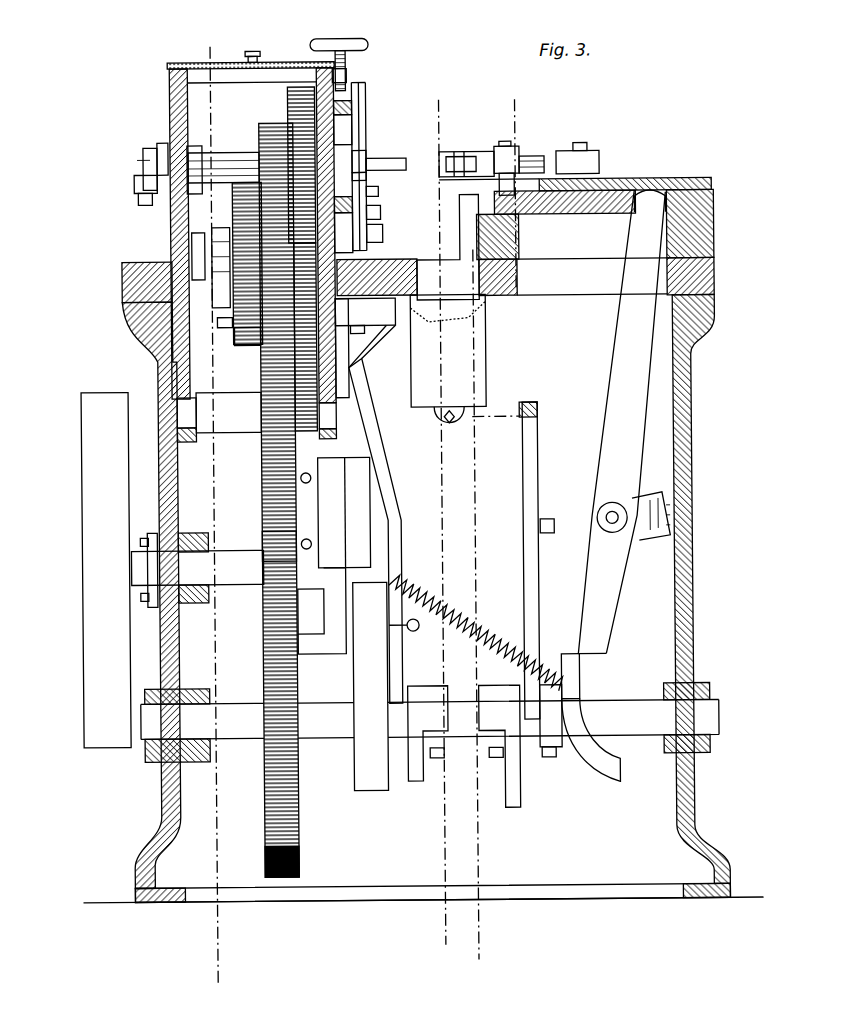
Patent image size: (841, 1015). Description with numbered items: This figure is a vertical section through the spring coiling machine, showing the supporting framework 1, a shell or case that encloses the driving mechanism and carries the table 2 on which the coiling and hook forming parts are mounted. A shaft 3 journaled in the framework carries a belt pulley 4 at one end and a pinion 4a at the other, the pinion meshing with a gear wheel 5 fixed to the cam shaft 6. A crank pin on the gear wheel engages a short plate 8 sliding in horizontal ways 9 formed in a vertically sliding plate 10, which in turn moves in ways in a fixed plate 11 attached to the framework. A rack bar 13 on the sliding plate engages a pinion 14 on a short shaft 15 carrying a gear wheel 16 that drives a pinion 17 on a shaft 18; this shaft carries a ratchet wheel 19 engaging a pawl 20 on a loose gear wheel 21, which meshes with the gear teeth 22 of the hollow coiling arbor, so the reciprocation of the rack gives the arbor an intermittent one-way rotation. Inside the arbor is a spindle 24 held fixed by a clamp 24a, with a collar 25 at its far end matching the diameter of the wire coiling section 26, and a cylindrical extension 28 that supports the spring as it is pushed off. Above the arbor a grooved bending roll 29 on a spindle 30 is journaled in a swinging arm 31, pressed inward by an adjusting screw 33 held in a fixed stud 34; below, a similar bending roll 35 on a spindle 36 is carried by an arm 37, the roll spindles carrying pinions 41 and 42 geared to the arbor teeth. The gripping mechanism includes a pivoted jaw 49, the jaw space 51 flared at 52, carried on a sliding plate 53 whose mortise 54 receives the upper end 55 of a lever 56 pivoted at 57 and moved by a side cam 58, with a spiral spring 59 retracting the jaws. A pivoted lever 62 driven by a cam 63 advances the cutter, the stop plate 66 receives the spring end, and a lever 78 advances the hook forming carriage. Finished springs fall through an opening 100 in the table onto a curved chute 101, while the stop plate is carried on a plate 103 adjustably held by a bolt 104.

The supporting framework 1 is at (159, 356).
The table 2 is at (127, 288).
The shaft 3 is at (136, 551).
The belt pulley 4 is at (69, 575).
The pinion 4a is at (262, 545).
The gear wheel 5 is at (262, 660).
The cam shaft 6 is at (323, 737).
The plate 8 is at (323, 600).
The horizontal ways 9 is at (325, 618).
The vertically sliding plate 10 is at (338, 540).
The fixed plate 11 is at (352, 665).
The rack bar 13 is at (345, 312).
The pinion 14 is at (337, 436).
The short shaft 15 is at (228, 393).
The gear wheel 16 is at (262, 480).
The pinion 17 is at (273, 235).
The shaft 18 is at (194, 248).
The ratchet wheel 19 is at (214, 231).
The pawl 20 is at (225, 330).
The gear wheel 21 is at (243, 338).
The gear teeth 22 is at (234, 155).
The spindle 24 is at (162, 144).
The clamp 24a is at (147, 181).
The collar 25 is at (369, 176).
The wire coiling section 26 is at (362, 158).
The cylindrical extension 28 is at (402, 160).
The grooved bending roll 29 is at (369, 100).
The spindle 30 is at (357, 125).
The arm 31 is at (355, 110).
The adjusting screw 33 is at (352, 56).
The fixed stud 34 is at (350, 76).
The grooved bending roll 35 is at (381, 192).
The spindle 36 is at (383, 212).
The arm 37 is at (385, 233).
The pinion 41 is at (291, 97).
The pinion 42 is at (301, 238).
The gripping jaw 49 is at (514, 147).
The space between the jaws 51 is at (537, 157).
The flared receiving end 52 is at (494, 152).
The sliding plate 53 is at (550, 200).
The mortise 54 is at (692, 187).
The upper end of lever 55 is at (650, 192).
The lever 56 is at (630, 350).
The pivot 57 is at (604, 514).
The side cam 58 is at (585, 783).
The spiral spring 59 is at (485, 625).
The pivoted lever 62 is at (368, 394).
The cam 63 is at (413, 781).
The stop plate 66 is at (498, 219).
The lever 78 is at (523, 455).
The opening in table 100 is at (439, 272).
The curved chute 101 is at (487, 350).
The plate 103 is at (602, 162).
The bolt 104 is at (584, 144).